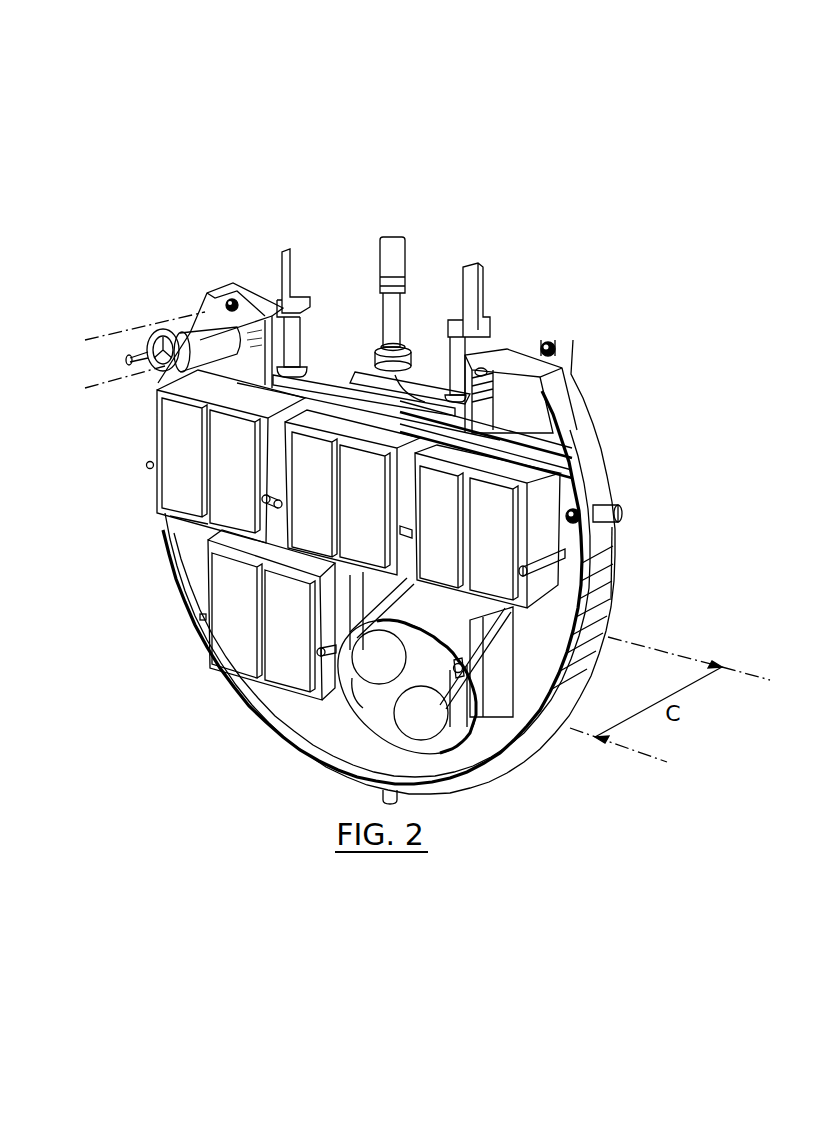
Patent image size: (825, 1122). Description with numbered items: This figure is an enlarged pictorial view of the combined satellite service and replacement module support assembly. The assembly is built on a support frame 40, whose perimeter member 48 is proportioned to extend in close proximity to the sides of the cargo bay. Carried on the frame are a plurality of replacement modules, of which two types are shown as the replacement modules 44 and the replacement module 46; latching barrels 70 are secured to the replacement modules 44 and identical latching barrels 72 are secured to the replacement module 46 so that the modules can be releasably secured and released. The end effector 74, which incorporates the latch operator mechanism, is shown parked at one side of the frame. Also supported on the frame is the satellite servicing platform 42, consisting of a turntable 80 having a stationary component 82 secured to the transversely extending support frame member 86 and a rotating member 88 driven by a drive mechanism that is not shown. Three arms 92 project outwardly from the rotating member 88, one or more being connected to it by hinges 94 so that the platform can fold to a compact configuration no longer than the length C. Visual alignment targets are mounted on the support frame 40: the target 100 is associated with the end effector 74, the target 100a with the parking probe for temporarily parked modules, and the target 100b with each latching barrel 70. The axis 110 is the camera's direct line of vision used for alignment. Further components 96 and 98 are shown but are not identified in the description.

The support frame 40 is at (612, 452).
The satellite servicing platform 42 is at (357, 330).
The replacement module 44 is at (178, 462).
The replacement module 46 is at (447, 742).
The perimeter member 48 is at (587, 650).
The latching barrels 70 is at (290, 503).
The latching barrels 72 is at (458, 660).
The end effector 74 is at (205, 340).
The turntable 80 is at (420, 367).
The stationary component 82 is at (380, 397).
The support frame member 86 is at (523, 440).
The rotating member 88 is at (368, 373).
The arms 92 is at (450, 437).
The hinges 94 is at (408, 353).
The post 96 is at (392, 307).
The locating pin 98 is at (391, 250).
The target 100 is at (228, 299).
The target 100a is at (556, 347).
The target 100b is at (578, 512).
The axis 110 is at (115, 338).